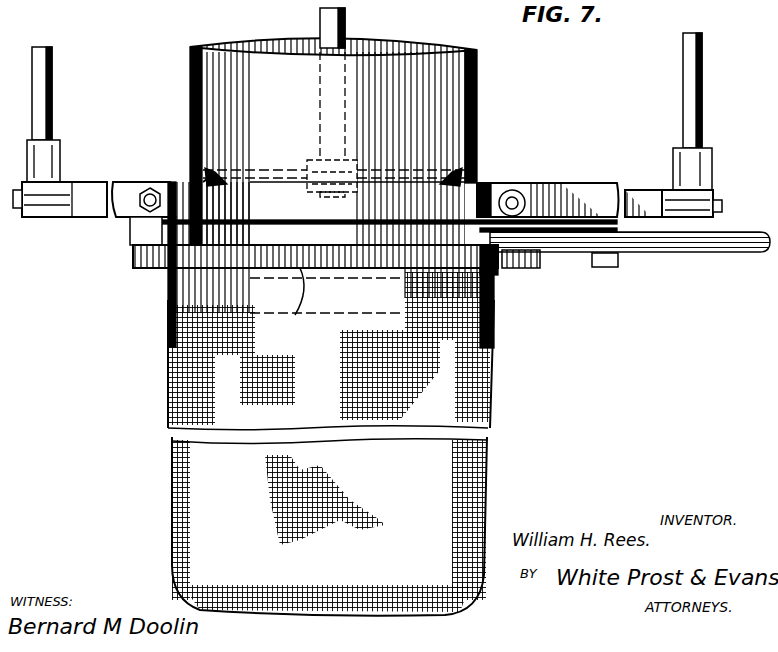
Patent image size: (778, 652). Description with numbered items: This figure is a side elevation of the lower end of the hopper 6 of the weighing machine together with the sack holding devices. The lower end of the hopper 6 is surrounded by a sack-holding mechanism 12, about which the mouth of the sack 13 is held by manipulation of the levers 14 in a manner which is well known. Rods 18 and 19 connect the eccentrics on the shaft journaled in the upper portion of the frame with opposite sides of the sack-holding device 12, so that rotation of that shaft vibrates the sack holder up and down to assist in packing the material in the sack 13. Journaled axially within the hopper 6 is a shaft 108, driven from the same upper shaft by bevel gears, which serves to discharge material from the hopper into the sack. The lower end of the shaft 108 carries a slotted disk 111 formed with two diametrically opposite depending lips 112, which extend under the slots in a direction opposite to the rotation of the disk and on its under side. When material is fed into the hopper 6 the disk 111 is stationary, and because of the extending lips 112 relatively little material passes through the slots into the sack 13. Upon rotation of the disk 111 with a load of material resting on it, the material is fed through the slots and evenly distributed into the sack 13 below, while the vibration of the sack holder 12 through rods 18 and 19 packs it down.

The hopper 6 is at (203, 87).
The shaft 108 is at (348, 22).
The slotted disk 111 is at (268, 180).
The depending lips 112 is at (205, 176).
The sack-holding mechanism 12 is at (492, 182).
The sack 13 is at (163, 327).
The levers 14 is at (672, 252).
The rod 18 is at (42, 82).
The rod 19 is at (690, 92).